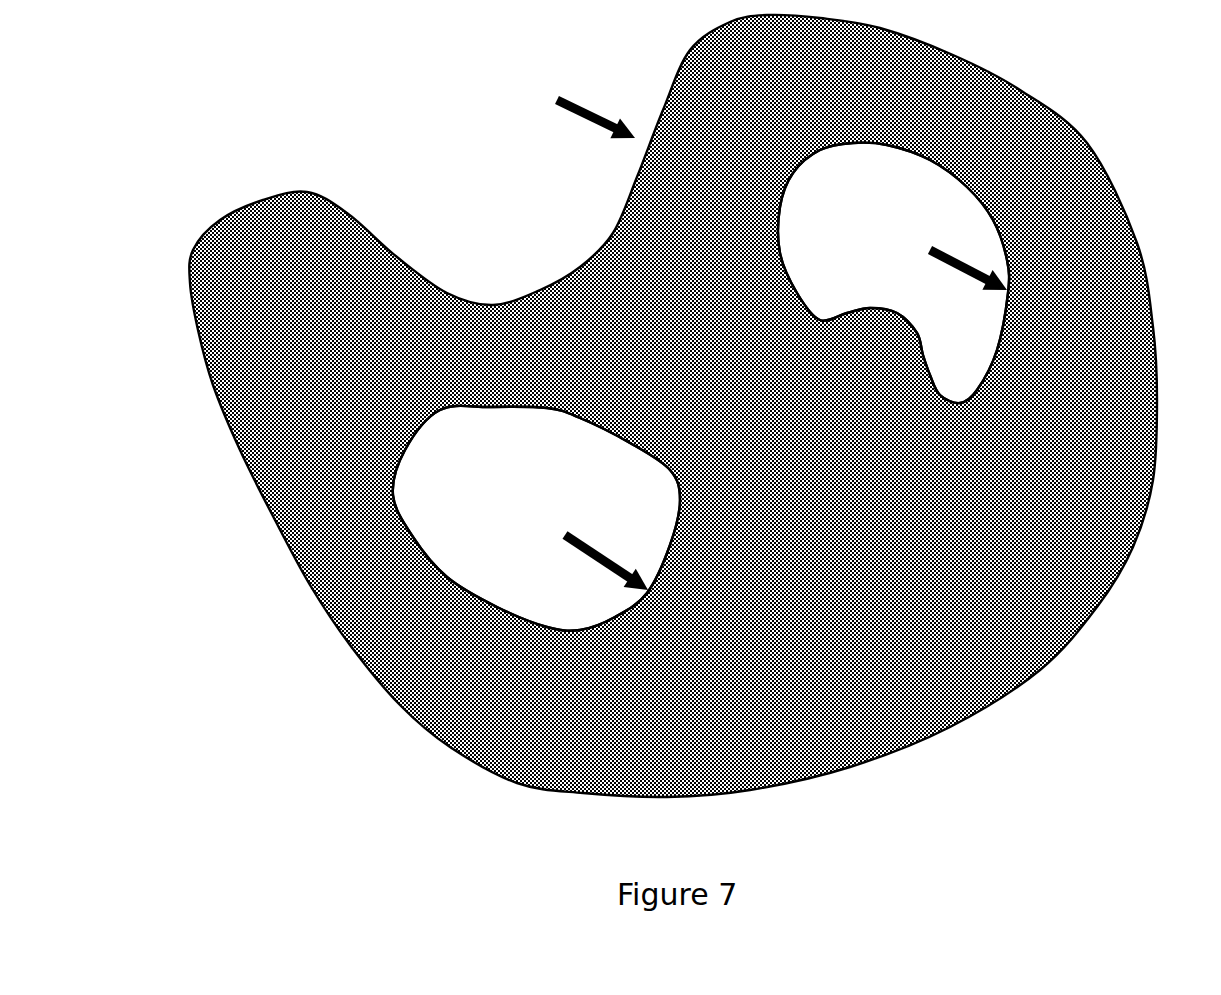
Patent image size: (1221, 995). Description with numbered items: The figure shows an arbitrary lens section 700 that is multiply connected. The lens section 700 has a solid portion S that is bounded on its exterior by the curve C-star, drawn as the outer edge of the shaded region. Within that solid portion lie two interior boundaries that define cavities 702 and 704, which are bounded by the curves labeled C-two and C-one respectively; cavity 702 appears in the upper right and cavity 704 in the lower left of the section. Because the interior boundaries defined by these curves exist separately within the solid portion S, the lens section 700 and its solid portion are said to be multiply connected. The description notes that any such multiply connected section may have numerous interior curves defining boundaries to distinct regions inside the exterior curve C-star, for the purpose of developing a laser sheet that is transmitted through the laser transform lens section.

The lens section 700 is at (258, 145).
The cavity 702 is at (947, 208).
The cavity 704 is at (430, 507).